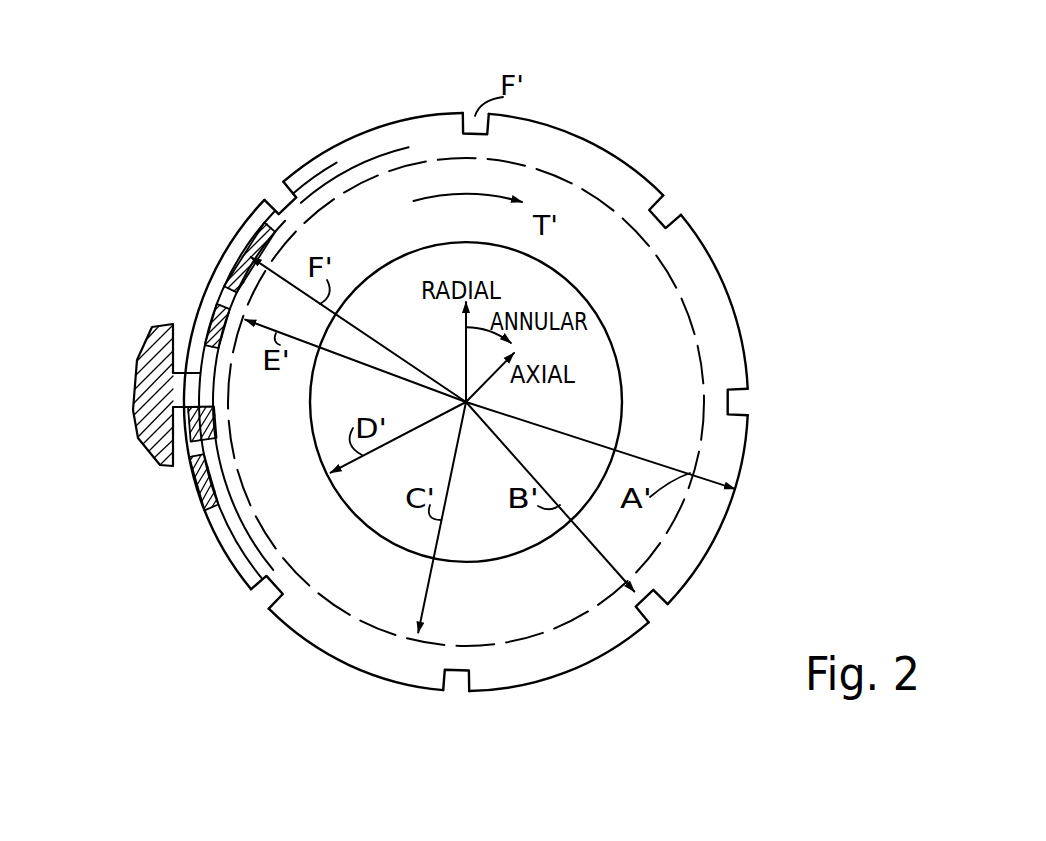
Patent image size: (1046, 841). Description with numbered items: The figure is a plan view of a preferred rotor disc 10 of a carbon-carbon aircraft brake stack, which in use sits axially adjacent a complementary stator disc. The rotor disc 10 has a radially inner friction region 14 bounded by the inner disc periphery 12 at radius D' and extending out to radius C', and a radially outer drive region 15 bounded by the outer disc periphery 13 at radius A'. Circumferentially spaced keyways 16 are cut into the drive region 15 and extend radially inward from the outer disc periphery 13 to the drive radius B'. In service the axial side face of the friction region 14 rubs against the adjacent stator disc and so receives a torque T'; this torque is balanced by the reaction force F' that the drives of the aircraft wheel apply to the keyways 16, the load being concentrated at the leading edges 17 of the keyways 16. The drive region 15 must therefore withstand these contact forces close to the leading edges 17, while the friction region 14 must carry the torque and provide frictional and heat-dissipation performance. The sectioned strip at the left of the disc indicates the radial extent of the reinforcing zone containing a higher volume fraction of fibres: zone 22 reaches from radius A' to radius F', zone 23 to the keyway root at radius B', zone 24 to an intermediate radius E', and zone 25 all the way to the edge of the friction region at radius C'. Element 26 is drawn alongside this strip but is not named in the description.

The rotor disc 10 is at (292, 652).
The inner disc periphery 12 is at (378, 273).
The outer disc periphery 13 is at (728, 290).
The friction region 14 is at (671, 403).
The drive region 15 is at (735, 363).
The keyways 16 is at (740, 407).
The leading edges 17 is at (272, 197).
The zone 22 is at (200, 490).
The zone 23 is at (187, 440).
The zone 24 is at (200, 320).
The zone 25 is at (220, 270).
The insert member 26 is at (140, 372).